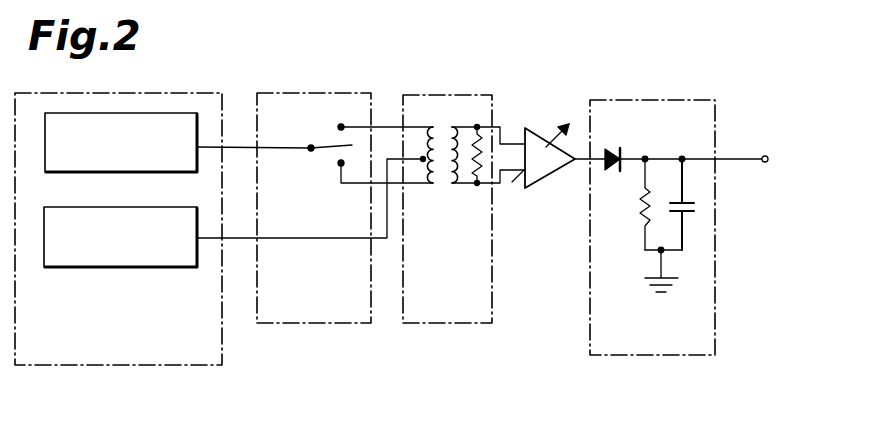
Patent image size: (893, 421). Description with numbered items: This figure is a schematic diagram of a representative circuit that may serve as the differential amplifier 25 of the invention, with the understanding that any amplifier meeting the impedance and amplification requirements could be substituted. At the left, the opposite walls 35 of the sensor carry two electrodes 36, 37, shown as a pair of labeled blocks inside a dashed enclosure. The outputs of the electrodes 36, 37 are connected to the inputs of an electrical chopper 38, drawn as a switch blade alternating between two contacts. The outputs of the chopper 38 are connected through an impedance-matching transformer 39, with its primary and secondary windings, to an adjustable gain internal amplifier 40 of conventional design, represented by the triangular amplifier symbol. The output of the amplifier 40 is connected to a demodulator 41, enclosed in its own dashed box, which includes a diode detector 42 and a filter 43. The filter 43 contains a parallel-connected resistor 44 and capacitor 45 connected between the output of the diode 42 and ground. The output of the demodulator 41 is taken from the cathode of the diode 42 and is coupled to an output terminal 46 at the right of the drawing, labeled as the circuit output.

The differential amplifier 25 is at (251, 85).
The opposite walls of the sensor 35 is at (128, 74).
The electrode 36 is at (203, 105).
The electrode 37 is at (106, 207).
The electrical chopper 38 is at (355, 93).
The impedance-matching transformer 39 is at (493, 96).
The adjustable gain internal amplifier 40 is at (548, 116).
The demodulator 41 is at (688, 100).
The diode detector 42 is at (612, 152).
The filter 43 is at (633, 222).
The resistor 44 is at (649, 197).
The capacitor 45 is at (672, 204).
The output terminal 46 is at (764, 164).